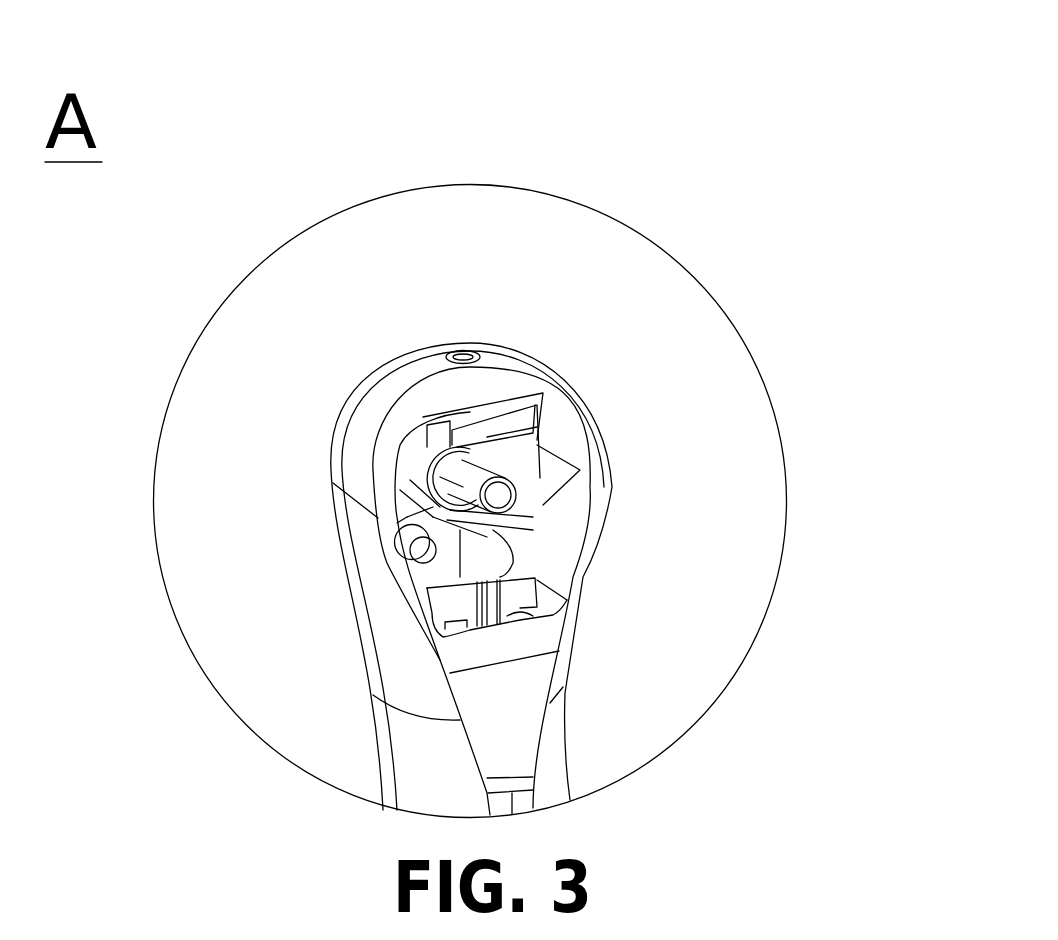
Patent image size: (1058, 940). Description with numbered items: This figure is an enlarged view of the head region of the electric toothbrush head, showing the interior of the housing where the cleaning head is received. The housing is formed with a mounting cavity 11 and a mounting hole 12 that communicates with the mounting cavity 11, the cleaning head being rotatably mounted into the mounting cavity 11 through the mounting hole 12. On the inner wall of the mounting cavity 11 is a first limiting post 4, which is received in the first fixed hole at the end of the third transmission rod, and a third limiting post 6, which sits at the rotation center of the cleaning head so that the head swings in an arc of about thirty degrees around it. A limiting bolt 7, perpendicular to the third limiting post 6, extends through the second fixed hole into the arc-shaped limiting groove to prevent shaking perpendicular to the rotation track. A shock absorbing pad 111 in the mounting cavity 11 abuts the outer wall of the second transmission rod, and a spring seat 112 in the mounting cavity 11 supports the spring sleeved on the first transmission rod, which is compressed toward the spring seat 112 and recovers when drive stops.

The first limiting post 4 is at (408, 549).
The third limiting post 6 is at (463, 485).
The limiting bolt 7 is at (473, 428).
The mounting cavity 11 is at (483, 560).
The mounting hole 12 is at (557, 533).
The shock absorbing pad 111 is at (527, 482).
The spring seat 112 is at (450, 447).